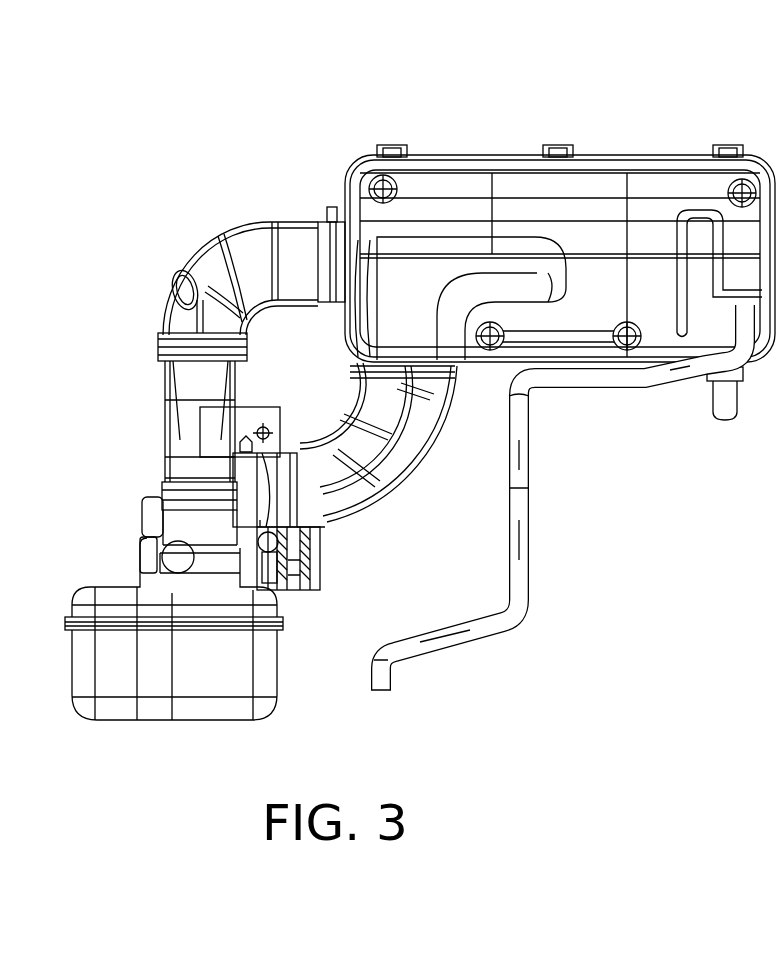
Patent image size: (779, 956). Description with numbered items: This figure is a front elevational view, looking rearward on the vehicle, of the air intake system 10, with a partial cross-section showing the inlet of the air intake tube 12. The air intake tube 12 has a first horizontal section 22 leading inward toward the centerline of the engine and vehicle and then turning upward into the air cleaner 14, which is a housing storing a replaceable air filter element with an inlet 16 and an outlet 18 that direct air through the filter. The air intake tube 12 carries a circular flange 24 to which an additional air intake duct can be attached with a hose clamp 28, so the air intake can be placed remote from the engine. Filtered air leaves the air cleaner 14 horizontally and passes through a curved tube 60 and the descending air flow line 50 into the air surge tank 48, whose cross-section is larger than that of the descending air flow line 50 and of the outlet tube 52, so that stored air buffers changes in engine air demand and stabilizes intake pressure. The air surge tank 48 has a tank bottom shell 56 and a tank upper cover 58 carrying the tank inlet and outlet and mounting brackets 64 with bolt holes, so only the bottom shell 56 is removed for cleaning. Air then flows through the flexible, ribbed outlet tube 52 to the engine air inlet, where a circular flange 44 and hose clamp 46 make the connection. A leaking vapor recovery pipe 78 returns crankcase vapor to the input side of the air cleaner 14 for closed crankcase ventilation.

The air intake system 10 is at (218, 197).
The air intake tube 12 is at (400, 457).
The air cleaner 14 is at (683, 170).
The inlet 16 is at (420, 266).
The outlet 18 is at (317, 240).
The first horizontal section 22 is at (281, 478).
The circular flange 24 is at (233, 452).
The hose clamp 28 is at (247, 440).
The circular flange 44 is at (313, 580).
The hose clamp 46 is at (300, 580).
The air surge tank 48 is at (185, 653).
The descending air flow line 50 is at (173, 423).
The outlet tube 52 is at (273, 573).
The tank bottom shell 56 is at (83, 665).
The tank upper cover 58 is at (88, 592).
The curved tube 60 is at (205, 262).
The mounting bracket 64 is at (148, 553).
The leaking vapor recovery pipe 78 is at (518, 530).